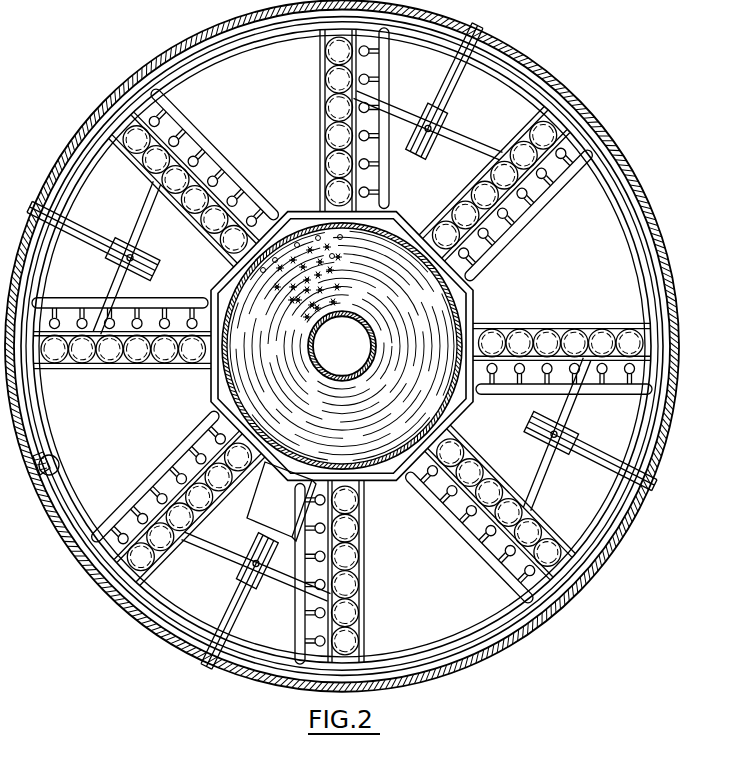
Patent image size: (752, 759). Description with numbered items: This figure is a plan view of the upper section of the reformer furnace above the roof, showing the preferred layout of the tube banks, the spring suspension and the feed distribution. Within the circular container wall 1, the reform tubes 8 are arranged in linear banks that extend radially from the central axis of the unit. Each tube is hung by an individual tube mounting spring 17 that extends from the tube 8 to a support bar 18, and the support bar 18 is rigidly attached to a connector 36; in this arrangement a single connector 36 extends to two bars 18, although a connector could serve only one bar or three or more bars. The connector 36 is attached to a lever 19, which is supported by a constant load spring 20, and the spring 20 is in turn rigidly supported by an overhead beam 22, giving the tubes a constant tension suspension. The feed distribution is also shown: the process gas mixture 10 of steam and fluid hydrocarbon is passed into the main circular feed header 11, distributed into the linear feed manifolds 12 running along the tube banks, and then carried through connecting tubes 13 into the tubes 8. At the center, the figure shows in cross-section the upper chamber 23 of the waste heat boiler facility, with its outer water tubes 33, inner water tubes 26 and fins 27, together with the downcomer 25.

The container wall 1 is at (585, 105).
The reform tubes 8 is at (163, 354).
The process gas mixture 10 is at (62, 463).
The main circular feed header 11 is at (634, 273).
The linear feed manifolds 12 is at (166, 298).
The connecting tubes 13 is at (63, 314).
The tube mounting springs 17 is at (133, 358).
The support bar 18 is at (543, 503).
The lever 19 is at (247, 567).
The constant load spring 20 is at (263, 493).
The overhead beam 22 is at (245, 628).
The upper chamber 23 is at (333, 462).
The downcomer 25 is at (376, 334).
The inner water tubes 26 is at (347, 291).
The fins 27 is at (341, 253).
The outer water tubes 33 is at (313, 232).
The connector 36 is at (258, 560).